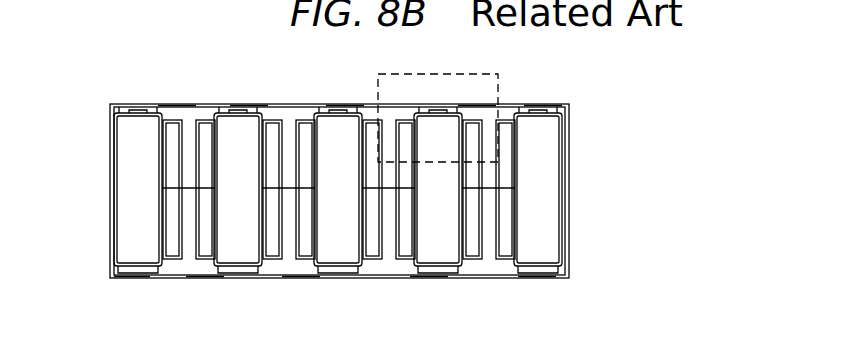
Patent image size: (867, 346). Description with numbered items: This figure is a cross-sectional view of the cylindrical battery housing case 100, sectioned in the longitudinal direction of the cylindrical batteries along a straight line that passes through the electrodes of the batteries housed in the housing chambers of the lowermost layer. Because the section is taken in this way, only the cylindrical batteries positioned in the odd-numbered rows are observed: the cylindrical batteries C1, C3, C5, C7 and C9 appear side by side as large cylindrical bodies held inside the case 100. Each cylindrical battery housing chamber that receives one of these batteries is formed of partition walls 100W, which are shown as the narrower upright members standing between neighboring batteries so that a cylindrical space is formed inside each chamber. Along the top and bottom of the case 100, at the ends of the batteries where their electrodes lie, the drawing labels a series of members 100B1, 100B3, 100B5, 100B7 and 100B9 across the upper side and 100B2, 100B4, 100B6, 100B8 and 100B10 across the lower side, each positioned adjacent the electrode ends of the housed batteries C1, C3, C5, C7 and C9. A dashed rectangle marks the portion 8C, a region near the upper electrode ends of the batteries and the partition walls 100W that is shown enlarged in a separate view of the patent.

The cylindrical battery housing case 100 is at (569, 203).
The portion 8C is at (433, 74).
The cylindrical battery C1 is at (548, 230).
The cylindrical battery C3 is at (440, 225).
The cylindrical battery C5 is at (340, 232).
The cylindrical battery C7 is at (233, 232).
The cylindrical battery C9 is at (135, 230).
The partition wall 100W is at (408, 210).
The bus bar 100B1 is at (543, 104).
The bus bar 100B2 is at (537, 278).
The bus bar 100B3 is at (477, 103).
The bus bar 100B4 is at (428, 278).
The bus bar 100B5 is at (345, 103).
The bus bar 100B6 is at (300, 278).
The bus bar 100B7 is at (248, 103).
The bus bar 100B8 is at (205, 278).
The bus bar 100B9 is at (167, 103).
The bus bar 100B10 is at (125, 278).